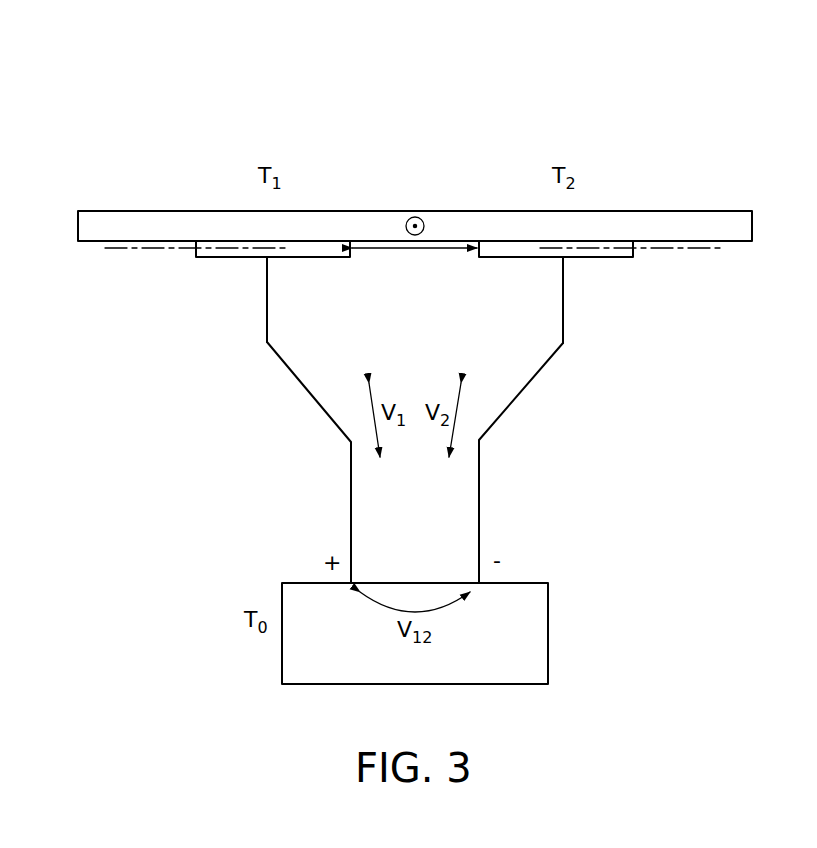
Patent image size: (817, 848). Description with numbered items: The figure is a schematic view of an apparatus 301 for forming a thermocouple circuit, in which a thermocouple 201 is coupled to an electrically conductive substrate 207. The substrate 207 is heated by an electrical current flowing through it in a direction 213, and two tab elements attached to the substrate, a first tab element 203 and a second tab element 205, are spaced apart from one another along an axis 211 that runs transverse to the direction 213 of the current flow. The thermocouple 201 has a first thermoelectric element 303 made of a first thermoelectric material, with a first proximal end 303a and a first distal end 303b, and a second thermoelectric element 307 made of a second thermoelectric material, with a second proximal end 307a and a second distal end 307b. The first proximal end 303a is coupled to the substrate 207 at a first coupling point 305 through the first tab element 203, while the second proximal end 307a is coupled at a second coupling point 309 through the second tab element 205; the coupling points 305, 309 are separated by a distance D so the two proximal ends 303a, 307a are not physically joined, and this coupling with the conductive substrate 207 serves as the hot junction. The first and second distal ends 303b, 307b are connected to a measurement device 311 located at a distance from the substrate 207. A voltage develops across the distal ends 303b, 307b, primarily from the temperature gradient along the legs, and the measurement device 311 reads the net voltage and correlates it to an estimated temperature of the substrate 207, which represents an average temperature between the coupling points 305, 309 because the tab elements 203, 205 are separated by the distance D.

The thermocouple 201 is at (230, 458).
The first tab element 203 is at (210, 258).
The second tab element 205 is at (618, 258).
The electrically conductive substrate 207 is at (712, 211).
The axis 211 is at (708, 250).
The direction of the electrical current flow 213 is at (415, 217).
The apparatus 301 is at (330, 128).
The first thermoelectric element 303 is at (307, 388).
The first proximal end 303a is at (267, 326).
The first distal end 303b is at (351, 504).
The first coupling point 305 is at (257, 230).
The second thermoelectric element 307 is at (523, 392).
The second proximal end 307a is at (563, 326).
The second distal end 307b is at (479, 504).
The second coupling point 309 is at (572, 230).
The measurement device 311 is at (548, 628).
The distance D is at (413, 252).